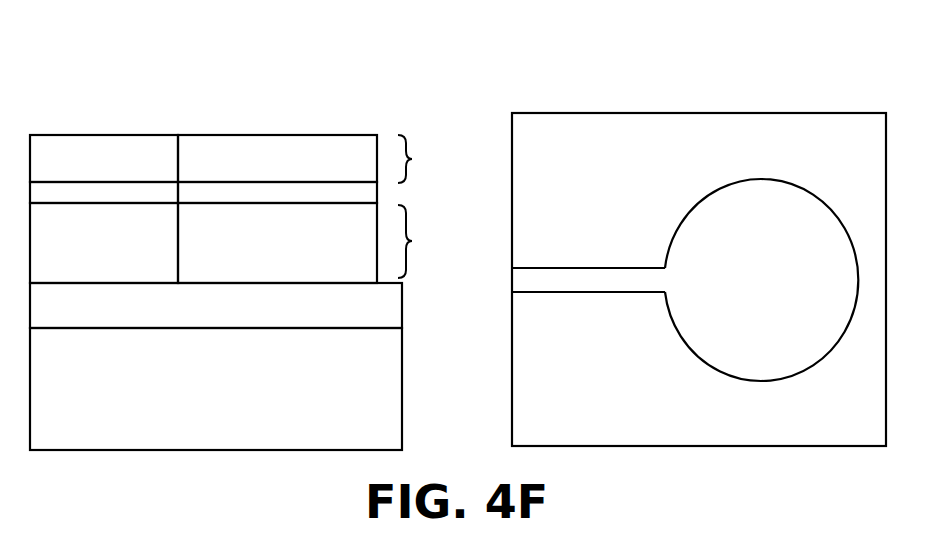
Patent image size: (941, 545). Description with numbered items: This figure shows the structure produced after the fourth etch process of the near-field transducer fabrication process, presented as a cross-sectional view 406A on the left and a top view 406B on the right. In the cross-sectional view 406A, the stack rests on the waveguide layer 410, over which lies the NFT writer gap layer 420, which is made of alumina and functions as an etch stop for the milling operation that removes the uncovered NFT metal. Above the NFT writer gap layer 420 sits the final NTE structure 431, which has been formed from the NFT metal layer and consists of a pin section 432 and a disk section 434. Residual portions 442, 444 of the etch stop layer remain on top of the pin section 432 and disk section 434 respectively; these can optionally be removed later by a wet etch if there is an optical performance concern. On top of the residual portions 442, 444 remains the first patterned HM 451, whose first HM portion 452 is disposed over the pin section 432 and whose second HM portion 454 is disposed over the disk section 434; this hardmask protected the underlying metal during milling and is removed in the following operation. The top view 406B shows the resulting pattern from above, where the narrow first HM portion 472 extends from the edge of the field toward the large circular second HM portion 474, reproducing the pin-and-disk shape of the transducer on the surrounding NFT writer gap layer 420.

The cross-sectional view 406A is at (134, 43).
The top view 406B is at (502, 41).
The waveguide layer 410 is at (216, 389).
The NFT writer gap layer 420 is at (458, 279).
The final NTE structure 431 is at (424, 241).
The pin section 432 is at (104, 243).
The disk section 434 is at (277, 243).
The residual portion of etch stop layer 442 is at (104, 192).
The residual portion of etch stop layer 444 is at (277, 192).
The first patterned HM 451 is at (424, 159).
The first HM portion 452 is at (104, 158).
The second HM portion 454 is at (277, 158).
The first HM portion 472 is at (588, 280).
The second HM portion 474 is at (761, 280).